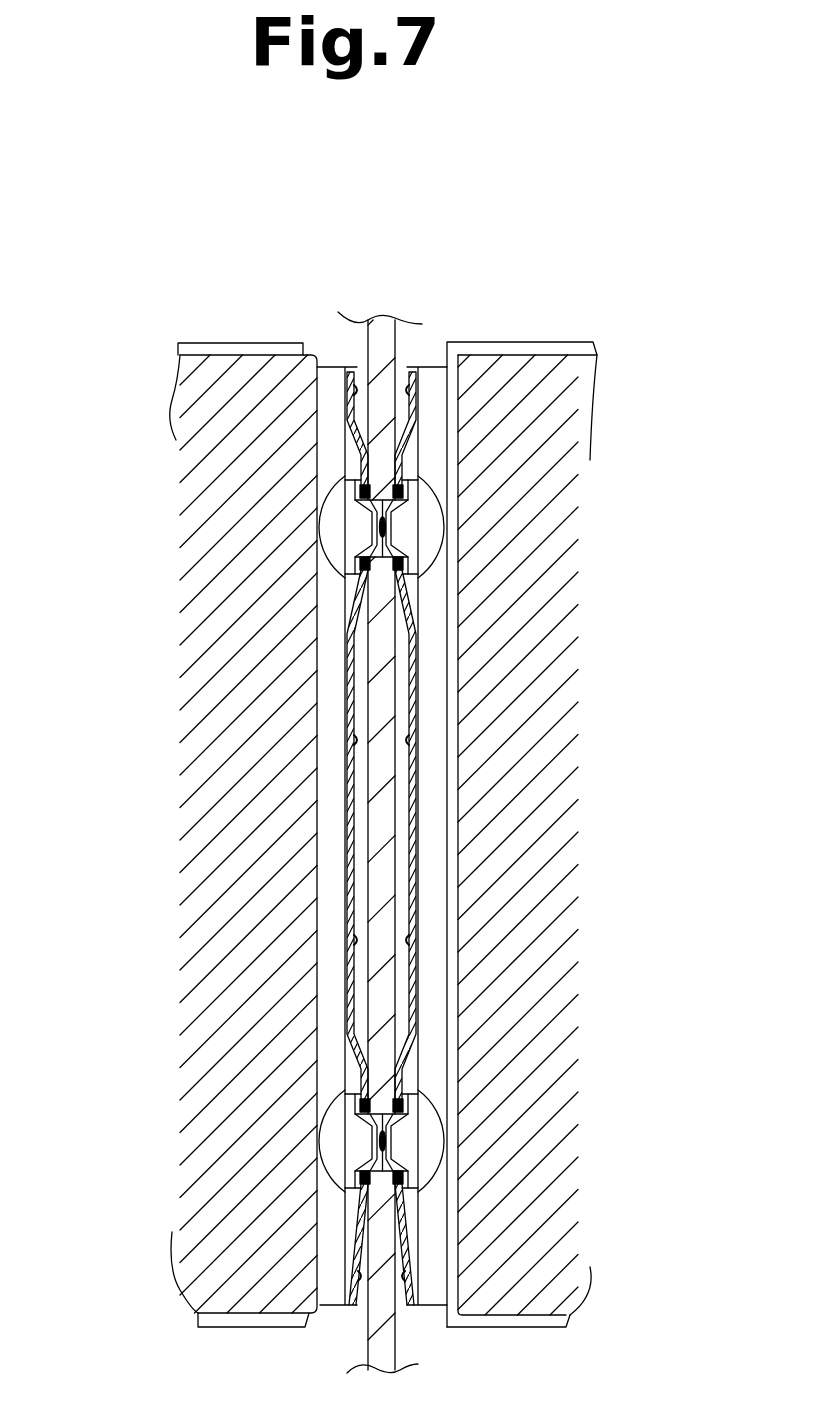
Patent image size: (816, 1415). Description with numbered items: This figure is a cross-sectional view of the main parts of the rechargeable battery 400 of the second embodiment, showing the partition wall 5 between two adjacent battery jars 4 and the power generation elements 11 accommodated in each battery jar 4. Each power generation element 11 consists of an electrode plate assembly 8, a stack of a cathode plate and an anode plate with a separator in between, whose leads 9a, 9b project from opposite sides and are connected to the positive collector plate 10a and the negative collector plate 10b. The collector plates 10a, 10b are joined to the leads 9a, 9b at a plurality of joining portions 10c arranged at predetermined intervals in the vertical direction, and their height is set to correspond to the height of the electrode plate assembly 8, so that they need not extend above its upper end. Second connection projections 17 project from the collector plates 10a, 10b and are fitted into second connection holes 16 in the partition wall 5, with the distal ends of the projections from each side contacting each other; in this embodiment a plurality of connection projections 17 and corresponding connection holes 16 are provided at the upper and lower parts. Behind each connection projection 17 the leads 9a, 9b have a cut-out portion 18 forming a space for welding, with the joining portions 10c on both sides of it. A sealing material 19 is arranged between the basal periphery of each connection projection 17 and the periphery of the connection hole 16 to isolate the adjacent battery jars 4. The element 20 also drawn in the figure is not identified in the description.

The rechargeable battery 400 is at (170, 305).
The battery jar 4 is at (145, 333).
The partition wall 5 is at (382, 333).
The electrode plate assembly 8 is at (195, 752).
The lead of the cathode plate 9a is at (432, 855).
The lead of the anode plate 9b is at (328, 853).
The positive collector plate 10a is at (417, 890).
The negative collector plate 10b is at (350, 888).
The joining portions 10c is at (352, 390).
The power generation element 11 is at (252, 337).
The second connection hole 16 is at (392, 540).
The second connection projection 17 is at (372, 535).
The cut-out portion 18 is at (380, 527).
The sealing material 19 is at (360, 487).
The coupling wall 20 is at (357, 560).